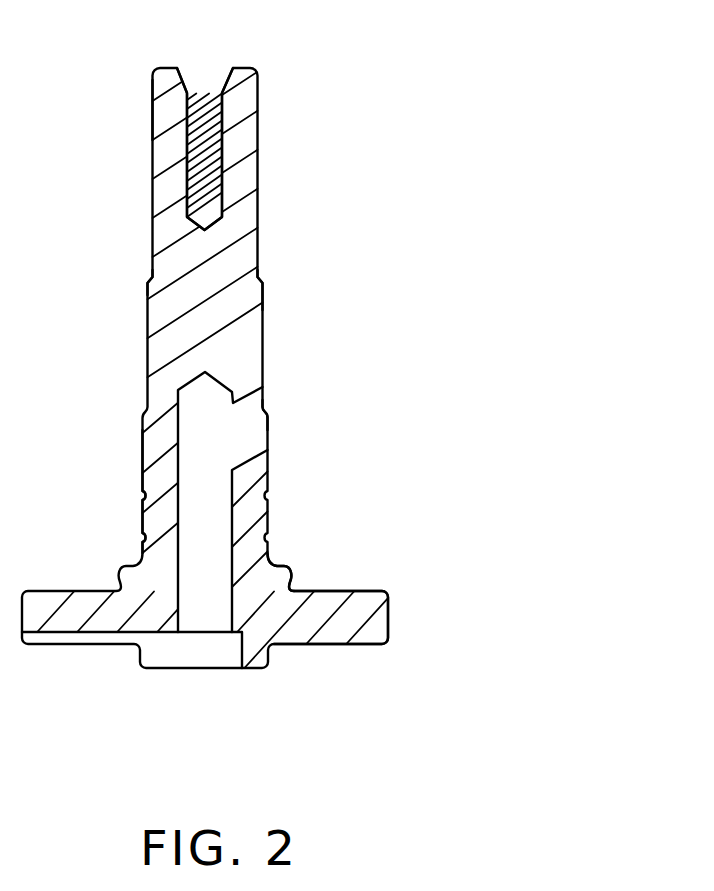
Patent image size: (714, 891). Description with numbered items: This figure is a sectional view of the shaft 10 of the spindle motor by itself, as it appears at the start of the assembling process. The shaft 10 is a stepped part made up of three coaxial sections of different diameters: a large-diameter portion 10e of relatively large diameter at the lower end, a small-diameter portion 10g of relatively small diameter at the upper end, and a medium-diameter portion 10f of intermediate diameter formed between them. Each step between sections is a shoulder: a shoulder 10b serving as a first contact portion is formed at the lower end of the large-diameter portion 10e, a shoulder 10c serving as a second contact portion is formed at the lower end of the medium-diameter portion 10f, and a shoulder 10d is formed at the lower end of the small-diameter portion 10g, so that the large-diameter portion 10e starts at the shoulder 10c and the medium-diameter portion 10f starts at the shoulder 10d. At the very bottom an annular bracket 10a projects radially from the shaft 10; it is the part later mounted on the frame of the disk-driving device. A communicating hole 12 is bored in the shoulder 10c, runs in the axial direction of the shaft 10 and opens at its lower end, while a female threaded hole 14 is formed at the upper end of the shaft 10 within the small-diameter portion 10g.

The shaft 10 is at (262, 117).
The annular bracket 10a is at (383, 640).
The shoulder 10b is at (289, 578).
The shoulder 10c is at (263, 417).
The shoulder 10d is at (148, 282).
The large-diameter portion 10e is at (142, 472).
The medium-diameter portion 10f is at (263, 300).
The small-diameter portion 10g is at (152, 128).
The communicating hole 12 is at (210, 598).
The female threaded hole 14 is at (196, 100).